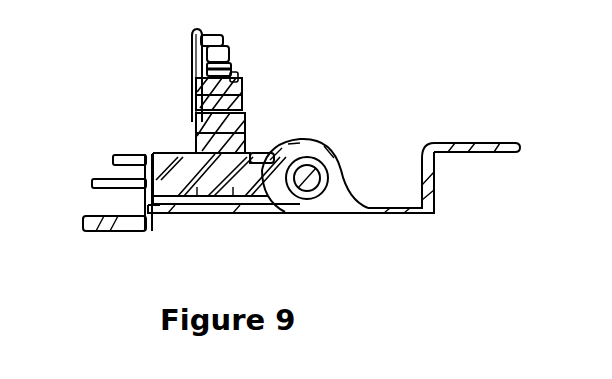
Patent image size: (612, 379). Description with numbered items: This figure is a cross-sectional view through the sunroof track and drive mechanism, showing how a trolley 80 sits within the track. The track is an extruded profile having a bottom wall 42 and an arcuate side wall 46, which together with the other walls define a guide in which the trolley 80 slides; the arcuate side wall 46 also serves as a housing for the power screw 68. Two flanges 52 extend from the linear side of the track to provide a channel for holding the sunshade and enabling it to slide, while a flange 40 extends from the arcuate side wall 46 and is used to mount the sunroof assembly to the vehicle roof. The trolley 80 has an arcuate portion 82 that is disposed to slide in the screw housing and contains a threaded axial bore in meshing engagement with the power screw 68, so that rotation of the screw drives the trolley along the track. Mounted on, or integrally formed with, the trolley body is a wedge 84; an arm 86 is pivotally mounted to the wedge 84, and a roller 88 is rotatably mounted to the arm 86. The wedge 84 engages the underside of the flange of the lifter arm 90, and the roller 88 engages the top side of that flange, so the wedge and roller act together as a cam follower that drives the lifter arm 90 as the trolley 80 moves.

The flange 40 is at (456, 143).
The bottom wall 42 is at (228, 214).
The arcuate side wall 46 is at (318, 143).
The flanges 52 is at (92, 184).
The power screw 68 is at (330, 159).
The trolley 80 is at (198, 196).
The arcuate portion 82 is at (287, 136).
The wedge 84 is at (194, 122).
The arm 86 is at (246, 118).
The roller 88 is at (228, 66).
The lifter arm 90 is at (191, 61).